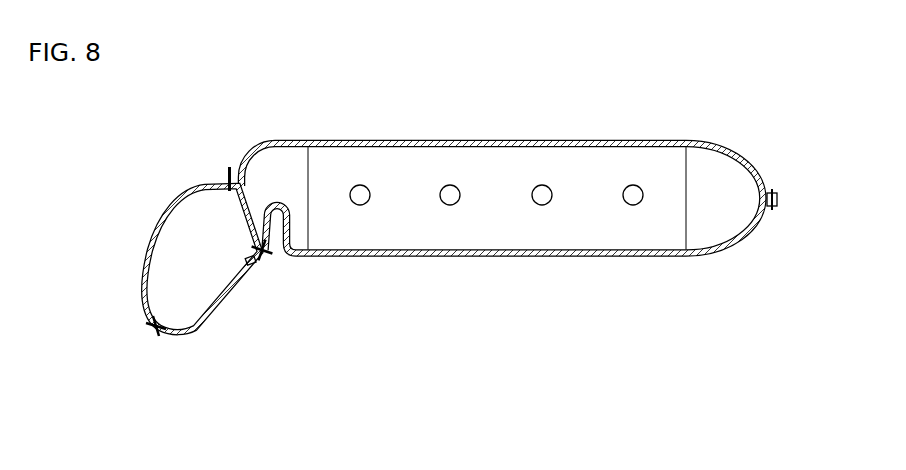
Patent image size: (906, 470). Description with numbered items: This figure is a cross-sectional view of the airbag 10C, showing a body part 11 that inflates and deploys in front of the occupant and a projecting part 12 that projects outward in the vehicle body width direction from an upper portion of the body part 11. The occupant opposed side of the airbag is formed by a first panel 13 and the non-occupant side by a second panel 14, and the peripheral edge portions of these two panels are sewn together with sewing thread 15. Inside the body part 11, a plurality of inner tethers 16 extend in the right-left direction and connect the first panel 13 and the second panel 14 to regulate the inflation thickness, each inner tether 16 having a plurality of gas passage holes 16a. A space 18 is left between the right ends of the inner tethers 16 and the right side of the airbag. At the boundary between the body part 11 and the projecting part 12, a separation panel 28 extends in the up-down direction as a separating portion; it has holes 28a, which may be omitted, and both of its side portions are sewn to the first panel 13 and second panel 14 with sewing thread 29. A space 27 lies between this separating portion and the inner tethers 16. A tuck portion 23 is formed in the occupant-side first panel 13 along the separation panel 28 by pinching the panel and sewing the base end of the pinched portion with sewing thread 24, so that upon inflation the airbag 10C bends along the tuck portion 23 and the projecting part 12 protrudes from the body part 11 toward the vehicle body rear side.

The airbag 10C is at (402, 126).
The body part 11 is at (478, 270).
The projecting part 12 is at (240, 313).
The first panel 13 is at (593, 259).
The second panel 14 is at (603, 140).
The sewing thread 15 is at (773, 212).
The inner tethers 16 is at (487, 170).
The gas passage holes 16a is at (441, 190).
The space 18 is at (722, 188).
The tuck portion 23 is at (274, 208).
The sewing thread 24 is at (292, 243).
The space 27 is at (283, 162).
The separation panel 28 is at (251, 233).
The holes 28a is at (246, 212).
The sewing thread 29 is at (230, 168).